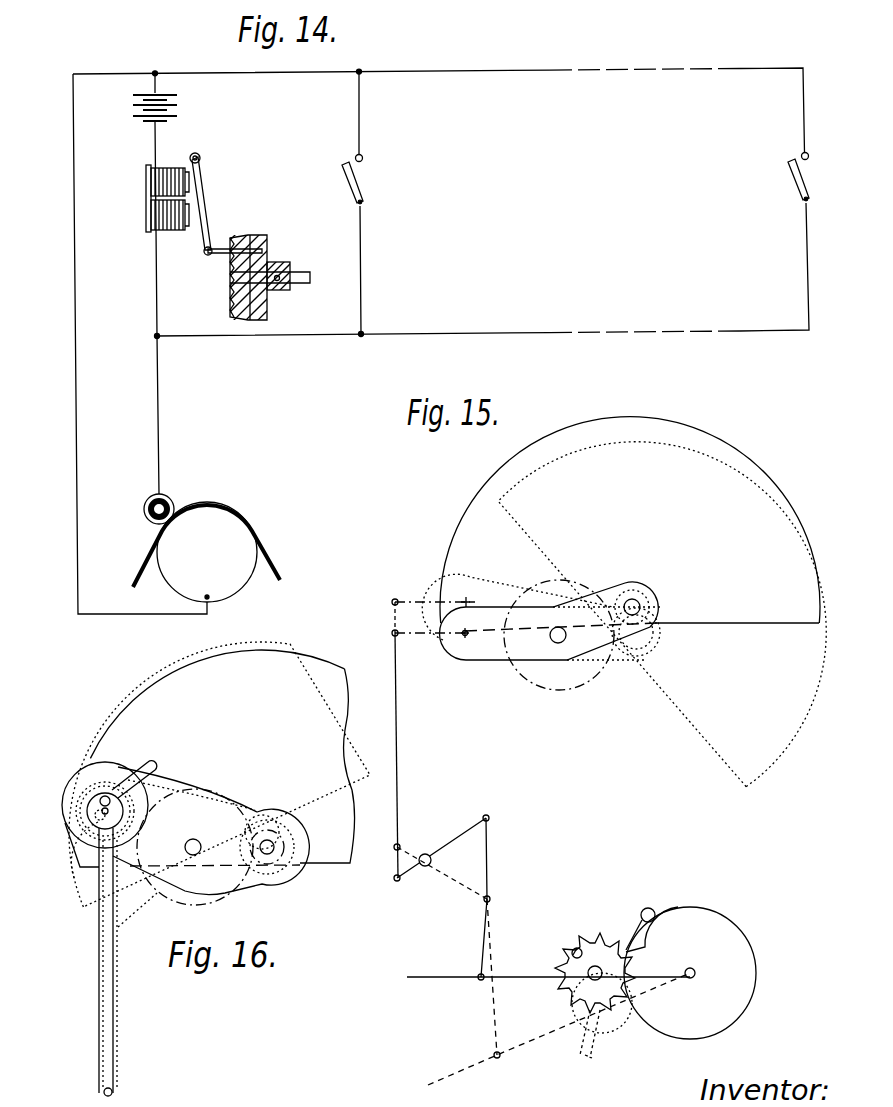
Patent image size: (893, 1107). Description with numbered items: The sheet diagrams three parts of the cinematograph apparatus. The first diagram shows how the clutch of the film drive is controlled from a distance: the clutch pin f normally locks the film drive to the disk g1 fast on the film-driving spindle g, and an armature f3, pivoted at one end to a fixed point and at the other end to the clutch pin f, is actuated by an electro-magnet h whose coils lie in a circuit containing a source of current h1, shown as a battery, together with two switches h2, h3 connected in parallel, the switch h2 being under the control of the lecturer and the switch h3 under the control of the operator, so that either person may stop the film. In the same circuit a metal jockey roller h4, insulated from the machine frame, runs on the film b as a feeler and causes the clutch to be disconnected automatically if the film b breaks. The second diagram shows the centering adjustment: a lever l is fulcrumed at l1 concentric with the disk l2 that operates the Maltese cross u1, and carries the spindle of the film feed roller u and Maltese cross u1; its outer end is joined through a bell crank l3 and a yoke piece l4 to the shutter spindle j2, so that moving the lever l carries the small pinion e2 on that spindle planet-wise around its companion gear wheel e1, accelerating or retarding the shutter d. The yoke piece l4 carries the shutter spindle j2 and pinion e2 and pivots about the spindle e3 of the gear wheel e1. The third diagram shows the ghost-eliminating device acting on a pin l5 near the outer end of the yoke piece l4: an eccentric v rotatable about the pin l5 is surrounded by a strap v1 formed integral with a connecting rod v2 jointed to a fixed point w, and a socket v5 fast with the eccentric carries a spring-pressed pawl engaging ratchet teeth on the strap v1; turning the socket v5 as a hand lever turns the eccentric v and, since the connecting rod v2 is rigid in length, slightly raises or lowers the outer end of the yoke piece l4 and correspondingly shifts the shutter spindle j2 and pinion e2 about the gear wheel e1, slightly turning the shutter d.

In FIG. 14, the source of current h1 is at (178, 110).
In FIG. 14, the electro-magnet h is at (147, 196).
In FIG. 14, the armature f3 is at (203, 188).
In FIG. 14, the clutch pin f is at (220, 255).
In FIG. 14, the disk g1 is at (260, 242).
In FIG. 14, the film-driving spindle g is at (306, 281).
In FIG. 14, the switch h3 is at (358, 185).
In FIG. 14, the switch h2 is at (793, 177).
In FIG. 14, the jockey roller h4 is at (146, 503).
In FIG. 14, the film b is at (264, 553).
In FIG. 15, the rotary shutter d is at (470, 506).
In FIG. 16, the rotary shutter d is at (219, 774).
In FIG. 15, the gear wheel e1 is at (600, 667).
In FIG. 16, the gear wheel e1 is at (203, 808).
In FIG. 15, the pinion e2 is at (623, 587).
In FIG. 16, the pinion e2 is at (260, 827).
In FIG. 15, the spindle e3 is at (553, 641).
In FIG. 16, the spindle e3 is at (196, 839).
In FIG. 15, the shutter spindle j2 is at (632, 607).
In FIG. 16, the shutter spindle j2 is at (273, 851).
In FIG. 15, the yoke piece l4 is at (469, 660).
In FIG. 16, the yoke piece l4 is at (120, 762).
In FIG. 15, the connecting rod v2 is at (397, 746).
In FIG. 16, the connecting rod v2 is at (99, 977).
In FIG. 15, the bell crank l3 is at (485, 870).
In FIG. 15, the fixed point w is at (445, 976).
In FIG. 16, the fixed point w is at (112, 1088).
In FIG. 15, the lever l is at (449, 977).
In FIG. 15, the film feed roller u is at (598, 955).
In FIG. 15, the Maltese cross u1 is at (565, 945).
In FIG. 15, the fulcrum l1 is at (694, 969).
In FIG. 15, the disk l2 is at (690, 907).
In FIG. 16, the eccentric v is at (103, 818).
In FIG. 16, the strap v1 is at (107, 796).
In FIG. 16, the pin l5 is at (103, 798).
In FIG. 16, the socket v5 is at (122, 805).